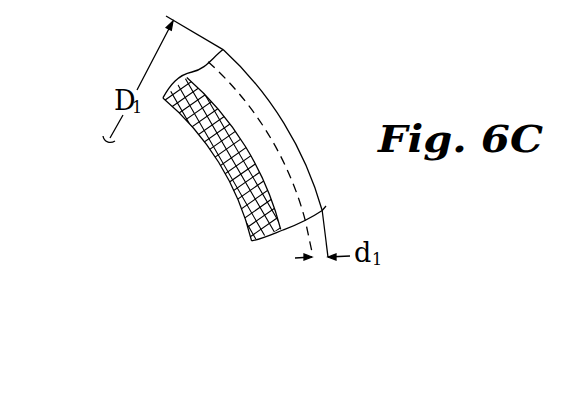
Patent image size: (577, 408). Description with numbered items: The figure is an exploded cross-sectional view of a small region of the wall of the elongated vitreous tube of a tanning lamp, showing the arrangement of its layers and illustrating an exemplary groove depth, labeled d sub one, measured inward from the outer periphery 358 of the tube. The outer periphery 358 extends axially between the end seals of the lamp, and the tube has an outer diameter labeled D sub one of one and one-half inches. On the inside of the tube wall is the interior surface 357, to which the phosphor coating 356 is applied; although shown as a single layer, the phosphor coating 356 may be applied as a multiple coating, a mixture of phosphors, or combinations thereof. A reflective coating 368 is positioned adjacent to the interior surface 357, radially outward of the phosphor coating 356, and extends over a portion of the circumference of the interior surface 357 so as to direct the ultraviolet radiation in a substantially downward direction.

The phosphor coating 356 is at (197, 150).
The interior surface 357 is at (245, 201).
The outer periphery 358 is at (278, 108).
The reflective coating 368 is at (206, 107).